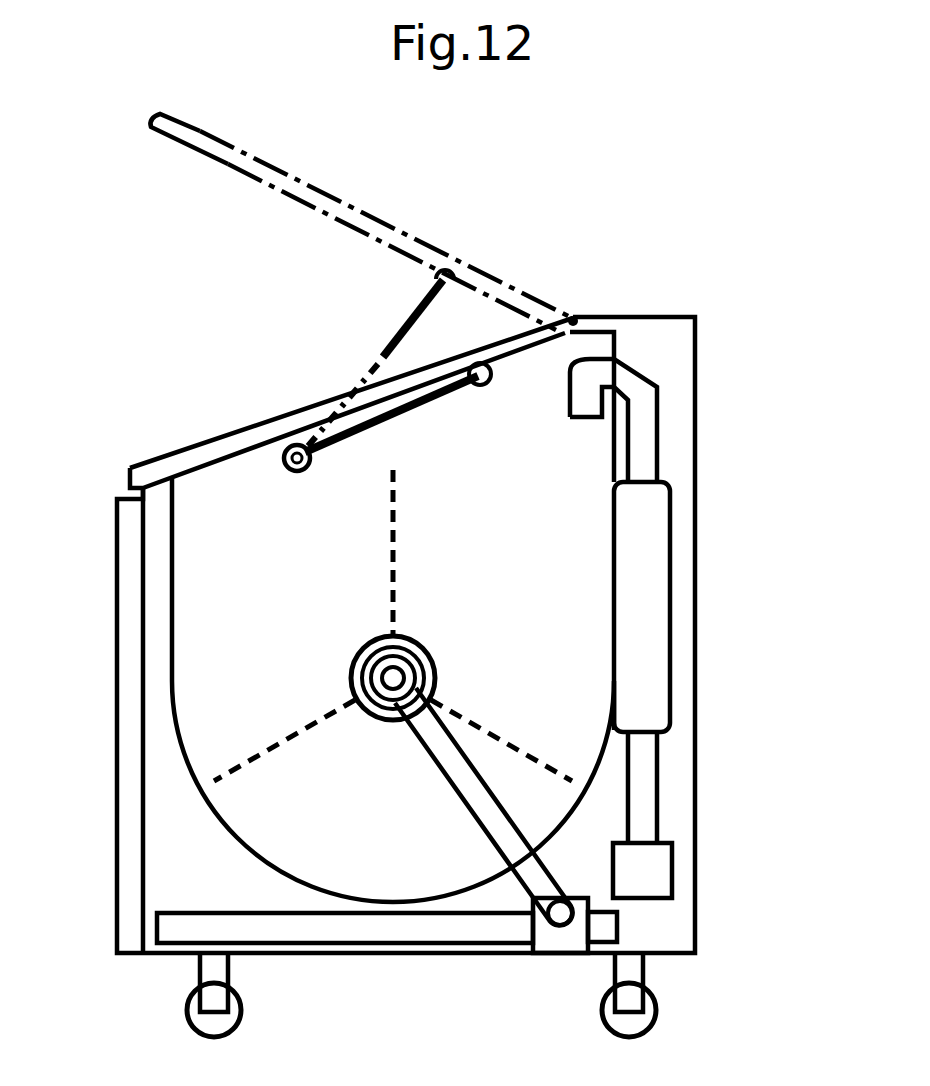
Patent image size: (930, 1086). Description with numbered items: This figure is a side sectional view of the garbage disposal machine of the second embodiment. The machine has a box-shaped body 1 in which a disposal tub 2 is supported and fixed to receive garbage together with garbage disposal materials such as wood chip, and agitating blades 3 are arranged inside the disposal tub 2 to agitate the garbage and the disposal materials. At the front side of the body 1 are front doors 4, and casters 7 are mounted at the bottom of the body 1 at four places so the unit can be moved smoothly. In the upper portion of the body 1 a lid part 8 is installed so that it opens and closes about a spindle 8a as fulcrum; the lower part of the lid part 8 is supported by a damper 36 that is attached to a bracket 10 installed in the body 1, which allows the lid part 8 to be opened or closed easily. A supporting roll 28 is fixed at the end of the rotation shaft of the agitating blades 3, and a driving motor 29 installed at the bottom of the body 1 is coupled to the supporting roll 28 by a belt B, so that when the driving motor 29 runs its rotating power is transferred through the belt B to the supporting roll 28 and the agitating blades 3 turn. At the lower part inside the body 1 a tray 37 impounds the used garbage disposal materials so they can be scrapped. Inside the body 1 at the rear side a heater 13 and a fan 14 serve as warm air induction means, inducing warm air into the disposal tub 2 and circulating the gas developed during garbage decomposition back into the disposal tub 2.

The body 1 is at (630, 317).
The disposal tub 2 is at (260, 860).
The agitating blades 3 is at (396, 582).
The front doors 4 is at (132, 678).
The casters 7 is at (207, 1015).
The lid part 8 is at (283, 417).
The spindle 8a is at (577, 317).
The bracket 10 is at (293, 471).
The heater 13 is at (642, 637).
The fan 14 is at (655, 870).
The supporting roll 28 is at (410, 660).
The driving motor 29 is at (560, 926).
The damper 36 is at (367, 430).
The tray 37 is at (325, 926).
The belt B is at (463, 803).